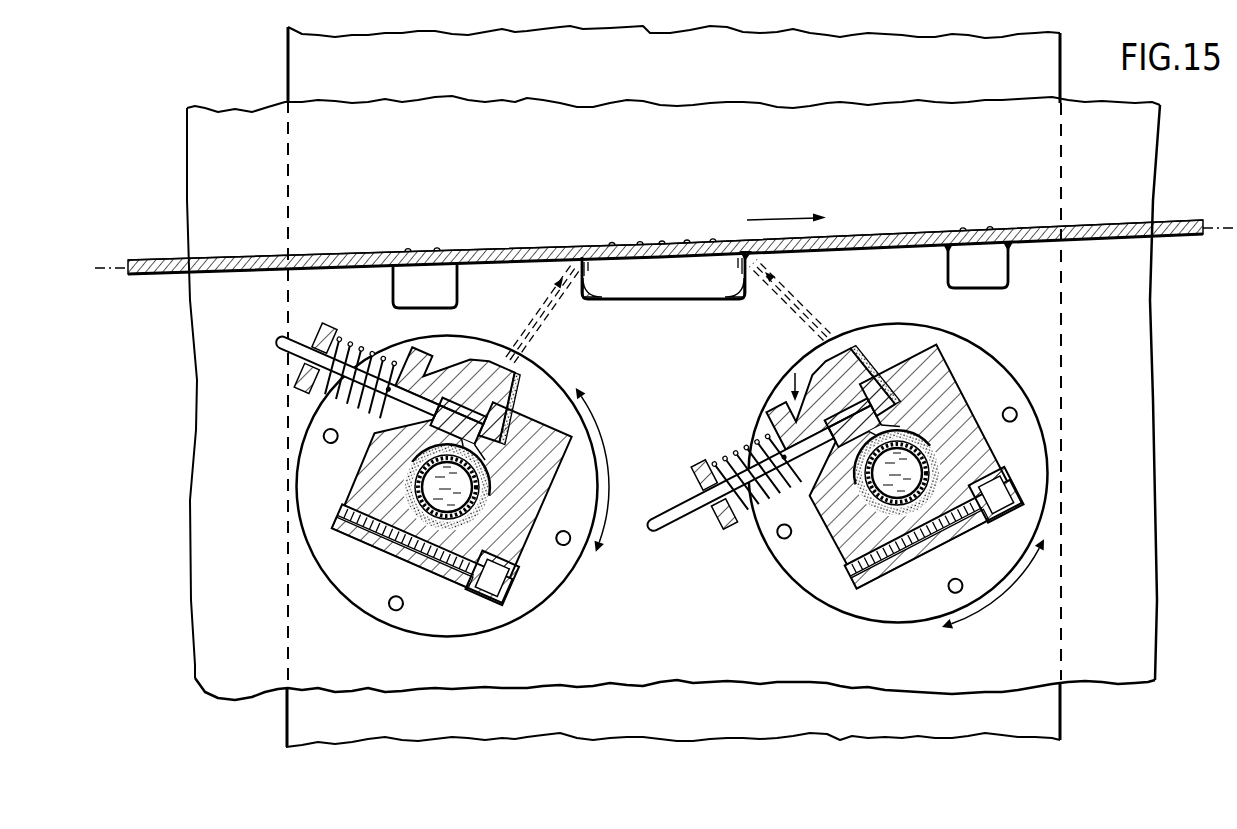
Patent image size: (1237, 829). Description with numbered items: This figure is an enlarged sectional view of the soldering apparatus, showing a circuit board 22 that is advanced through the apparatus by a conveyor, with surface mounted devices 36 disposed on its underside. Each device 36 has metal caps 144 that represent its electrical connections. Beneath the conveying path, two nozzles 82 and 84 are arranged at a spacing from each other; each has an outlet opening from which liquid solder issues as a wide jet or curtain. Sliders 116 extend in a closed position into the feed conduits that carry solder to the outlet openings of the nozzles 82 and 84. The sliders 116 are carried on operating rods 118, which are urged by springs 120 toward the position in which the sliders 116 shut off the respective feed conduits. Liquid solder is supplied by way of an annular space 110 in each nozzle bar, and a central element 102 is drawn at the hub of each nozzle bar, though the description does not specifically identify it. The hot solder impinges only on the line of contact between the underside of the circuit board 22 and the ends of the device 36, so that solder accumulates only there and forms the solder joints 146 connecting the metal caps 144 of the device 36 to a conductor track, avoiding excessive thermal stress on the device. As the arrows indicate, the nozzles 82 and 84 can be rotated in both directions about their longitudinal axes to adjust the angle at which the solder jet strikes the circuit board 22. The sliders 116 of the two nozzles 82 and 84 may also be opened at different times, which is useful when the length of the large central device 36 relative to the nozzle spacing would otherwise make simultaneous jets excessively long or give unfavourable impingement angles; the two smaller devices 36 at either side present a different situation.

The circuit board 22 is at (889, 232).
The device 36 is at (986, 281).
The nozzle 82 is at (523, 560).
The nozzle 84 is at (903, 562).
The hub shaft 102 is at (895, 493).
The annular space 110 is at (863, 501).
The slider 116 is at (882, 408).
The operating rod 118 is at (667, 520).
The spring 120 is at (740, 443).
The metal cap 144 is at (729, 298).
The solder connection 146 is at (1010, 245).